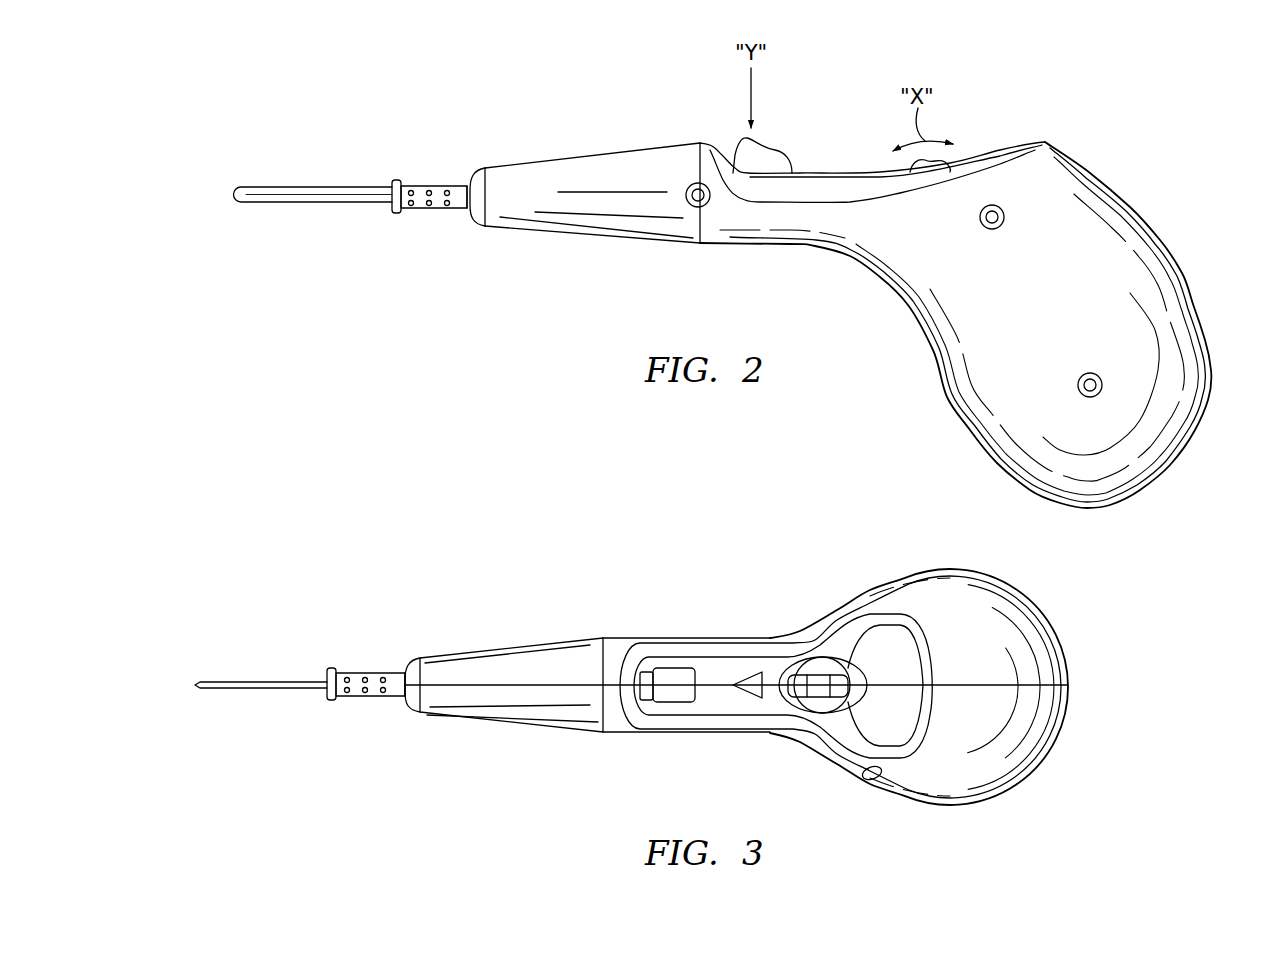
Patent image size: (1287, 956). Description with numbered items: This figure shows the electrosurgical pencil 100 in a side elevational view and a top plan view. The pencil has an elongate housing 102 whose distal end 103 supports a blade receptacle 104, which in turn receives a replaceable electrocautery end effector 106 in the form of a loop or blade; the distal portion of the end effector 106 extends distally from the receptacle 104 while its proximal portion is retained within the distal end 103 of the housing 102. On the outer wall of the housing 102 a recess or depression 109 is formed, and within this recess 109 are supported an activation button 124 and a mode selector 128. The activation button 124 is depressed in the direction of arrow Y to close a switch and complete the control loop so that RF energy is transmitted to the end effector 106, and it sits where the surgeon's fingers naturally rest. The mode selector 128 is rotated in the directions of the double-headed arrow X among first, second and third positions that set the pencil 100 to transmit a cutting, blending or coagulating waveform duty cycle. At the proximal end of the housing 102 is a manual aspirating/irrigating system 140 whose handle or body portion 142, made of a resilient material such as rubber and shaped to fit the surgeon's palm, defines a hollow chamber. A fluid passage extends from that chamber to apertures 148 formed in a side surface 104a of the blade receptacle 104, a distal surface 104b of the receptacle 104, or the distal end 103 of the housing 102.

In FIG. 2, the electrosurgical pencil 100 is at (690, 84).
In FIG. 3, the electrosurgical pencil 100 is at (692, 540).
In FIG. 2, the elongate housing 102 is at (630, 140).
In FIG. 3, the elongate housing 102 is at (535, 638).
In FIG. 2, the distal end of housing 103 is at (475, 222).
In FIG. 2, the blade receptacle 104 is at (428, 178).
In FIG. 3, the blade receptacle 104 is at (362, 670).
In FIG. 2, the side surface of blade receptacle 104a is at (455, 182).
In FIG. 3, the side surface of blade receptacle 104a is at (400, 672).
In FIG. 2, the distal surface of blade receptacle 104b is at (393, 185).
In FIG. 3, the distal surface of blade receptacle 104b is at (330, 676).
In FIG. 2, the electrocautery end effector 106 is at (263, 185).
In FIG. 3, the electrocautery end effector 106 is at (237, 683).
In FIG. 2, the recess or depression 109 is at (833, 158).
In FIG. 2, the activation button 124 is at (770, 140).
In FIG. 3, the activation button 124 is at (680, 668).
In FIG. 2, the mode selector 128 is at (955, 160).
In FIG. 3, the mode selector 128 is at (840, 675).
In FIG. 2, the manual aspirating/irrigating system 140 is at (1212, 300).
In FIG. 3, the manual aspirating/irrigating system 140 is at (1087, 668).
In FIG. 2, the handle or body portion 142 is at (1198, 380).
In FIG. 3, the handle or body portion 142 is at (912, 575).
In FIG. 2, the aperture 148 is at (408, 205).
In FIG. 3, the aperture 148 is at (347, 700).